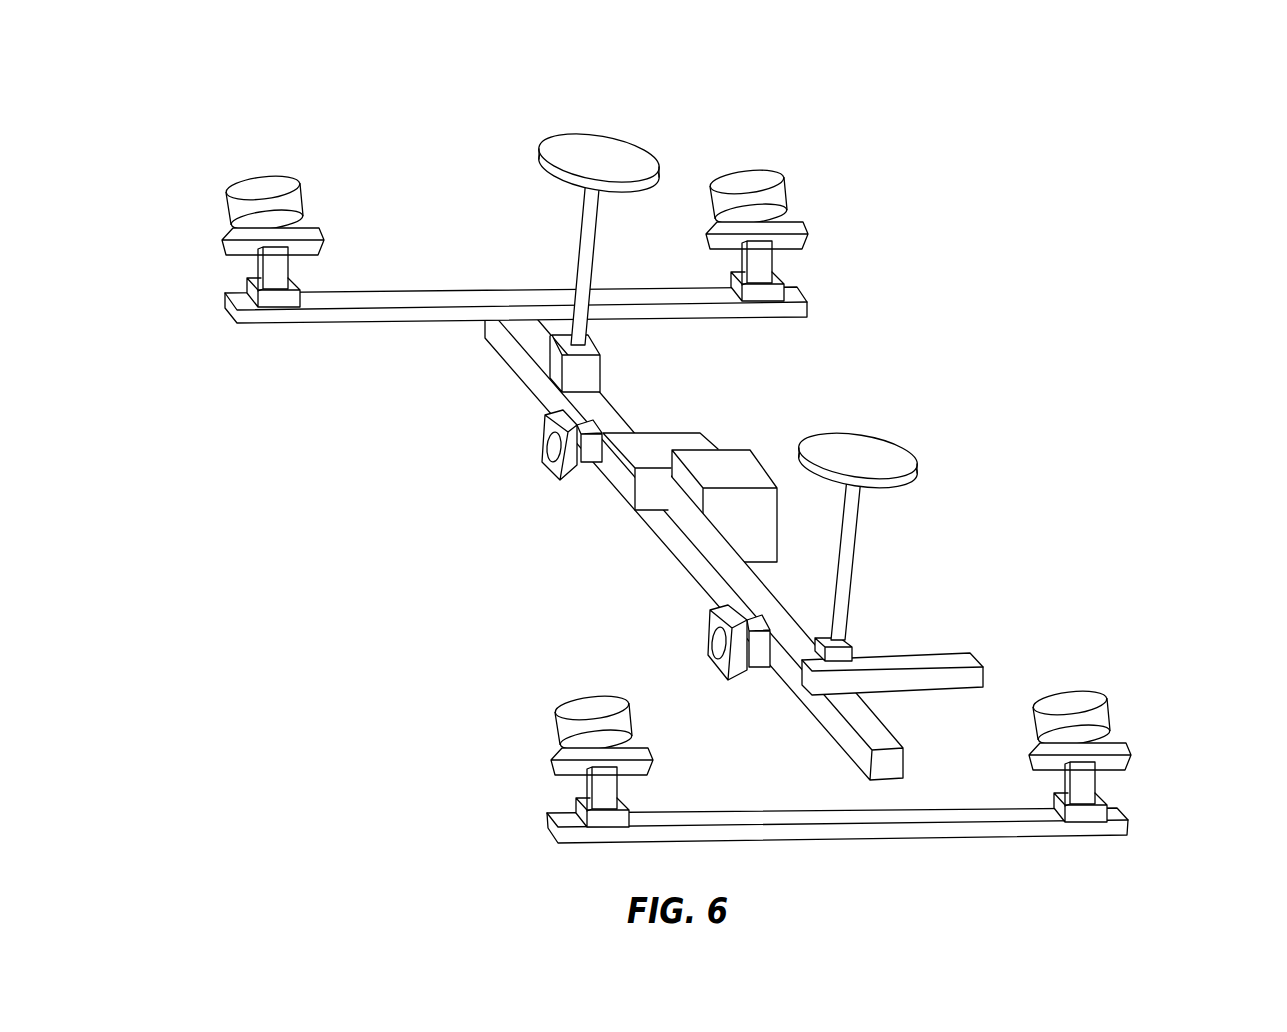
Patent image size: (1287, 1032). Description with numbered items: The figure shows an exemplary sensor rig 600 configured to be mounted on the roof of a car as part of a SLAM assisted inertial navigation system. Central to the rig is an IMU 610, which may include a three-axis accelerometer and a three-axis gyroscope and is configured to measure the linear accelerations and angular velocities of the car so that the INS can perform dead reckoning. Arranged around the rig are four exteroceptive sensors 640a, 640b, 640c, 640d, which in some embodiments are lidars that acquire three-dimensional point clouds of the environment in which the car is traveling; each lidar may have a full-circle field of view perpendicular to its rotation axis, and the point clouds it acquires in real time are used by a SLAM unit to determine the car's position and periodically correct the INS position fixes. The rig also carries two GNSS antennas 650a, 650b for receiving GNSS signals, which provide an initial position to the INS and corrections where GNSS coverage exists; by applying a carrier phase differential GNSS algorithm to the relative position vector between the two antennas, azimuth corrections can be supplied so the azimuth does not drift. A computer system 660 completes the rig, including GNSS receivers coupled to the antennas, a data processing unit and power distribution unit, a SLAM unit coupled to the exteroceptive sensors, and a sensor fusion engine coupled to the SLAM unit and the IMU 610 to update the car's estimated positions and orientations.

The sensor rig 600 is at (213, 67).
The IMU 610 is at (668, 540).
The exteroceptive sensor 640a is at (772, 157).
The exteroceptive sensor 640b is at (215, 212).
The exteroceptive sensor 640c is at (545, 752).
The exteroceptive sensor 640d is at (1127, 712).
The GNSS antenna 650a is at (532, 143).
The GNSS antenna 650b is at (917, 438).
The computer system 660 is at (596, 492).